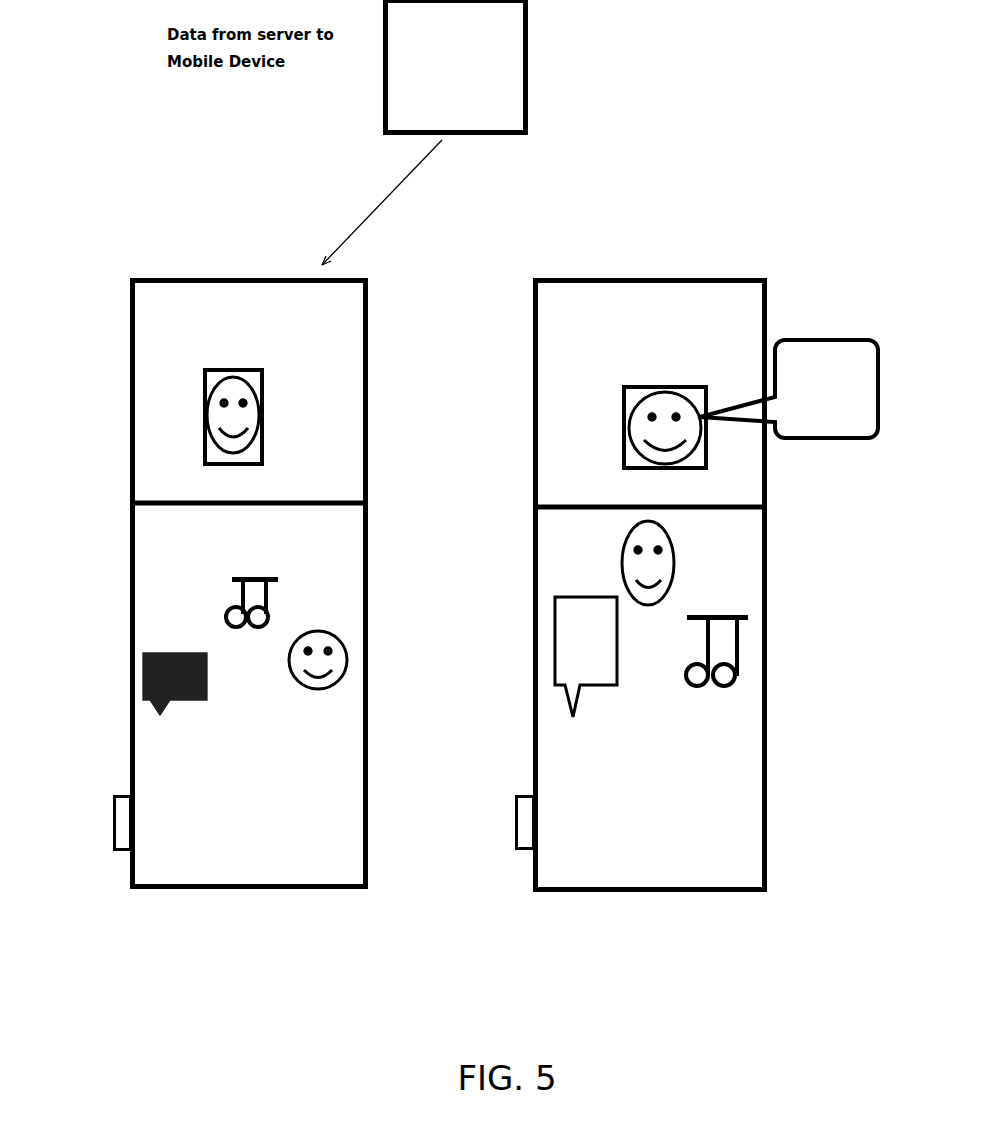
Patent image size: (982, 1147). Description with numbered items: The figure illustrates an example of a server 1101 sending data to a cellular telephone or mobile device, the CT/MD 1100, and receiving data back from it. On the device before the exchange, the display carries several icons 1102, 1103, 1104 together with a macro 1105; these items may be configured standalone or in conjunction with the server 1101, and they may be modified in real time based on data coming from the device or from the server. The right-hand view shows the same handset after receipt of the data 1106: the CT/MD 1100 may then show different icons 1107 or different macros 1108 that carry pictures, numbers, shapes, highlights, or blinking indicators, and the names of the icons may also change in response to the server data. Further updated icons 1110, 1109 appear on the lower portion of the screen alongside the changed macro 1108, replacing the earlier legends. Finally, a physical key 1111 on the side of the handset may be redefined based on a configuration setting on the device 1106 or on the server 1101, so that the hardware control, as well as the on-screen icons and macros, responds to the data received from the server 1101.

The CT/MD 1100 is at (130, 395).
The server 1101 is at (506, 118).
The icon 1102 is at (273, 413).
The icon 1103 is at (341, 631).
The icon 1104 is at (212, 627).
The macro 1105 is at (137, 657).
The device after receipt of data 1106 is at (530, 397).
The different icon 1107 is at (748, 355).
The different macro 1108 is at (548, 678).
The songs application icon 1109 is at (745, 642).
The calls application icon 1110 is at (680, 557).
The physical key 1111 is at (513, 815).